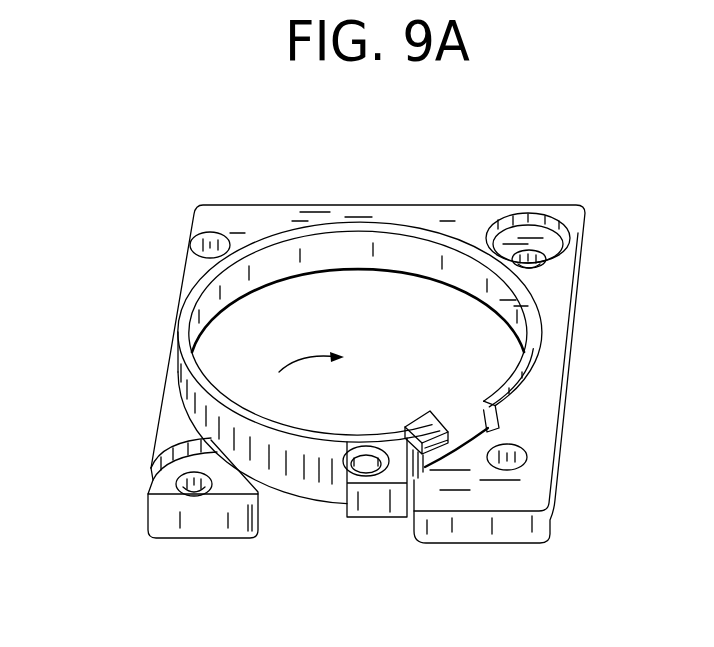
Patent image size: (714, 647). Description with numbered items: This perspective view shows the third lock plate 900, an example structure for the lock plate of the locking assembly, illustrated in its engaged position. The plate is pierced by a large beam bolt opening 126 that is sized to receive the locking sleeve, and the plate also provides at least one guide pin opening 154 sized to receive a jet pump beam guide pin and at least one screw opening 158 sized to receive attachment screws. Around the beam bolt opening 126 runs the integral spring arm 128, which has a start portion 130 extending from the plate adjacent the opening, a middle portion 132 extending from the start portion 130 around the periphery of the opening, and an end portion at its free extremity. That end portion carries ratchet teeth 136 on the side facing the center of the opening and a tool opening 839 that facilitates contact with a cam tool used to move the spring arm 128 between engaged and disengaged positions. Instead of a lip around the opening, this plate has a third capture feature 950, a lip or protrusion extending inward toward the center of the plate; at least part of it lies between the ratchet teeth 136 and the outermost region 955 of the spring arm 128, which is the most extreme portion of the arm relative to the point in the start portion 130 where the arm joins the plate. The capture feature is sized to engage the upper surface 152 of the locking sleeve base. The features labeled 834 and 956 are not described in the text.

The third lock plate 900 is at (634, 147).
The start portion 130 is at (518, 387).
The middle portion 132 is at (455, 245).
The spring arm 128 is at (377, 270).
The beam bolt opening 126 is at (288, 374).
The upper surface 152 is at (201, 234).
The screw opening 158 is at (572, 235).
The guide pin opening 154 is at (527, 458).
The ratchet teeth 136 is at (372, 444).
The tool opening 839 is at (371, 478).
The lower ring portion 834 is at (327, 500).
The third capture feature 950 is at (427, 424).
The outermost region 955 is at (453, 410).
The base portion 956 is at (463, 455).